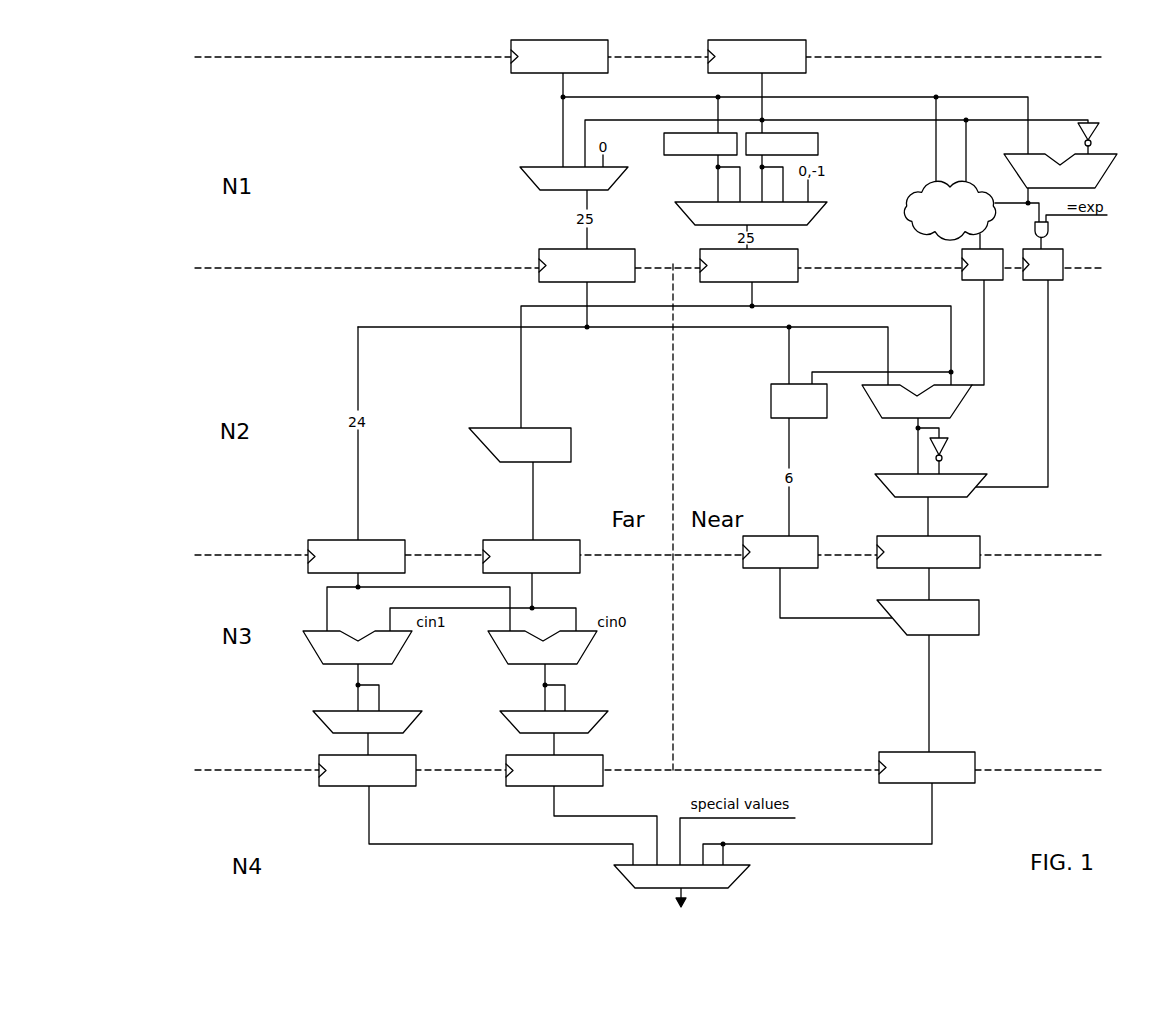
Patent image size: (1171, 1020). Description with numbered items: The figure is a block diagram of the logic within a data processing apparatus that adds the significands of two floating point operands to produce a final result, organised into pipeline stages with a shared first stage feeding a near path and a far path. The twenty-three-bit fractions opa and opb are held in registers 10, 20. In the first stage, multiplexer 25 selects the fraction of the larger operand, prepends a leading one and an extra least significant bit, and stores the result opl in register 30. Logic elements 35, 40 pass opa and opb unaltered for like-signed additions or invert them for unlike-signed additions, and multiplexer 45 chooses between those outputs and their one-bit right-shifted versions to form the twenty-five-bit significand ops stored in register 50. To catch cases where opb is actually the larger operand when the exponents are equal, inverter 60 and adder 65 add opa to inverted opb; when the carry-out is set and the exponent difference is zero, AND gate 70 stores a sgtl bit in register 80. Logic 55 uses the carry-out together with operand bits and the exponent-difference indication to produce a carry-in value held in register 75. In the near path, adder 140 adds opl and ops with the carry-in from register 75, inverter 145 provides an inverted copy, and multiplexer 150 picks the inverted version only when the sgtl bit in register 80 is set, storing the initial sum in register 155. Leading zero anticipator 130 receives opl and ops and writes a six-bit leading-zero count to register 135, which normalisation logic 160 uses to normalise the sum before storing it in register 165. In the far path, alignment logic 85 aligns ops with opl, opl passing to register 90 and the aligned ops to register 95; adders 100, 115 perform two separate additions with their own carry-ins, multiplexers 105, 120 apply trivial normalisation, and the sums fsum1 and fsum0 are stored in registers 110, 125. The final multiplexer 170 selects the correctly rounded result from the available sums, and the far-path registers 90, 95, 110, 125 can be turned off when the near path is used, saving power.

The register 10 is at (581, 37).
The register 20 is at (779, 37).
The multiplexer 25 is at (531, 179).
The register 30 is at (604, 246).
The logic element 35 is at (664, 143).
The logic element 40 is at (818, 144).
The multiplexer 45 is at (818, 222).
The register 50 is at (799, 263).
The logic 55 is at (903, 198).
The logic element 60 is at (1099, 130).
The adder 65 is at (1106, 176).
The AND gate 70 is at (1049, 233).
The register 75 is at (996, 281).
The register 80 is at (1065, 283).
The alignment logic 85 is at (572, 446).
The register 90 is at (382, 540).
The register 95 is at (557, 540).
The adder 100 is at (407, 652).
The multiplexer 105 is at (418, 723).
The register 110 is at (420, 769).
The adder 115 is at (599, 650).
The multiplexer 120 is at (605, 723).
The register 125 is at (605, 786).
The leading zero anticipator 130 is at (805, 419).
The register 135 is at (800, 536).
The adder 140 is at (960, 405).
The inverter 145 is at (950, 449).
The multiplexer 150 is at (966, 496).
The register 155 is at (981, 548).
The normalisation logic 160 is at (981, 618).
The register 165 is at (976, 757).
The multiplexer 170 is at (742, 879).